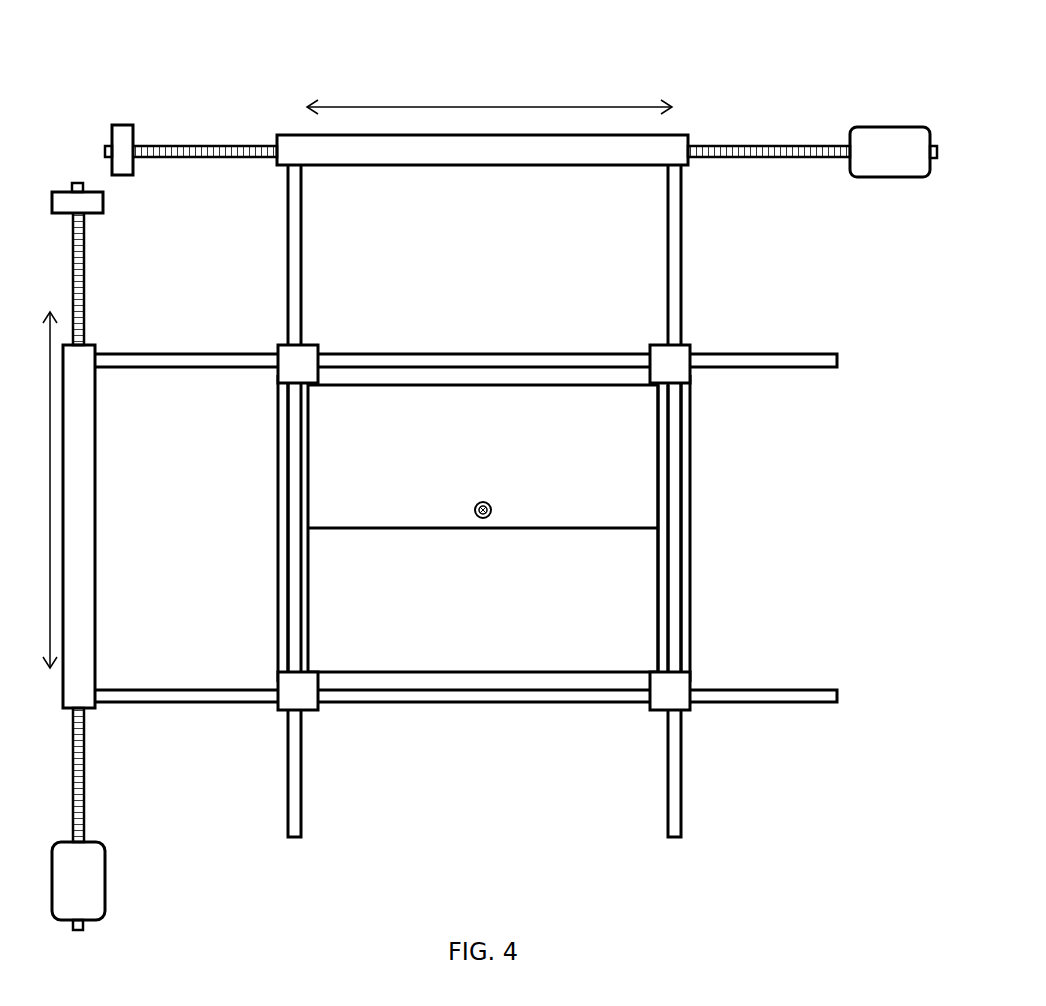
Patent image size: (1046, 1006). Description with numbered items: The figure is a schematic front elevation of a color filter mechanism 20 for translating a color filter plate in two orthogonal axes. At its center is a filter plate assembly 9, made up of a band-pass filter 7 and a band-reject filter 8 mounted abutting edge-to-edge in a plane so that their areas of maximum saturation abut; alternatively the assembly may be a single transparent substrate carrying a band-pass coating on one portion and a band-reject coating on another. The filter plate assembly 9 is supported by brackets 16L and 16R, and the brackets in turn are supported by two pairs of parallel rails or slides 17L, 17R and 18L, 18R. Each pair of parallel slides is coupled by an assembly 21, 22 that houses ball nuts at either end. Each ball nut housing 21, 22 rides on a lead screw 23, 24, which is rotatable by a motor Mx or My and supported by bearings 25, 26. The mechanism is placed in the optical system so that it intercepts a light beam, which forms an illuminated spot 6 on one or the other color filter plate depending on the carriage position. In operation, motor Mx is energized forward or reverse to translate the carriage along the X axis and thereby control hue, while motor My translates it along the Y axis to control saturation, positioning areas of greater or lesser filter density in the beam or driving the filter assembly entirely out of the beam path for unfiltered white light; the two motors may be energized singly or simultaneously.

The illuminated spot 6 is at (492, 508).
The band-pass filter 7 is at (662, 457).
The band-reject filter 8 is at (662, 610).
The filter plate assembly 9 is at (730, 528).
The bracket 16L is at (278, 405).
The bracket 16R is at (690, 567).
The parallel rail or slide 17L is at (287, 235).
The parallel rail or slide 17R is at (682, 217).
The parallel rail or slide 18L is at (812, 702).
The parallel rail or slide 18R is at (812, 357).
The mechanism 20 is at (102, 98).
The assembly housing ball nuts 21 is at (505, 137).
The assembly housing ball nuts 22 is at (63, 708).
The lead screw 23 is at (808, 145).
The lead screw 24 is at (73, 793).
The bearing 25 is at (132, 125).
The bearing 26 is at (60, 190).